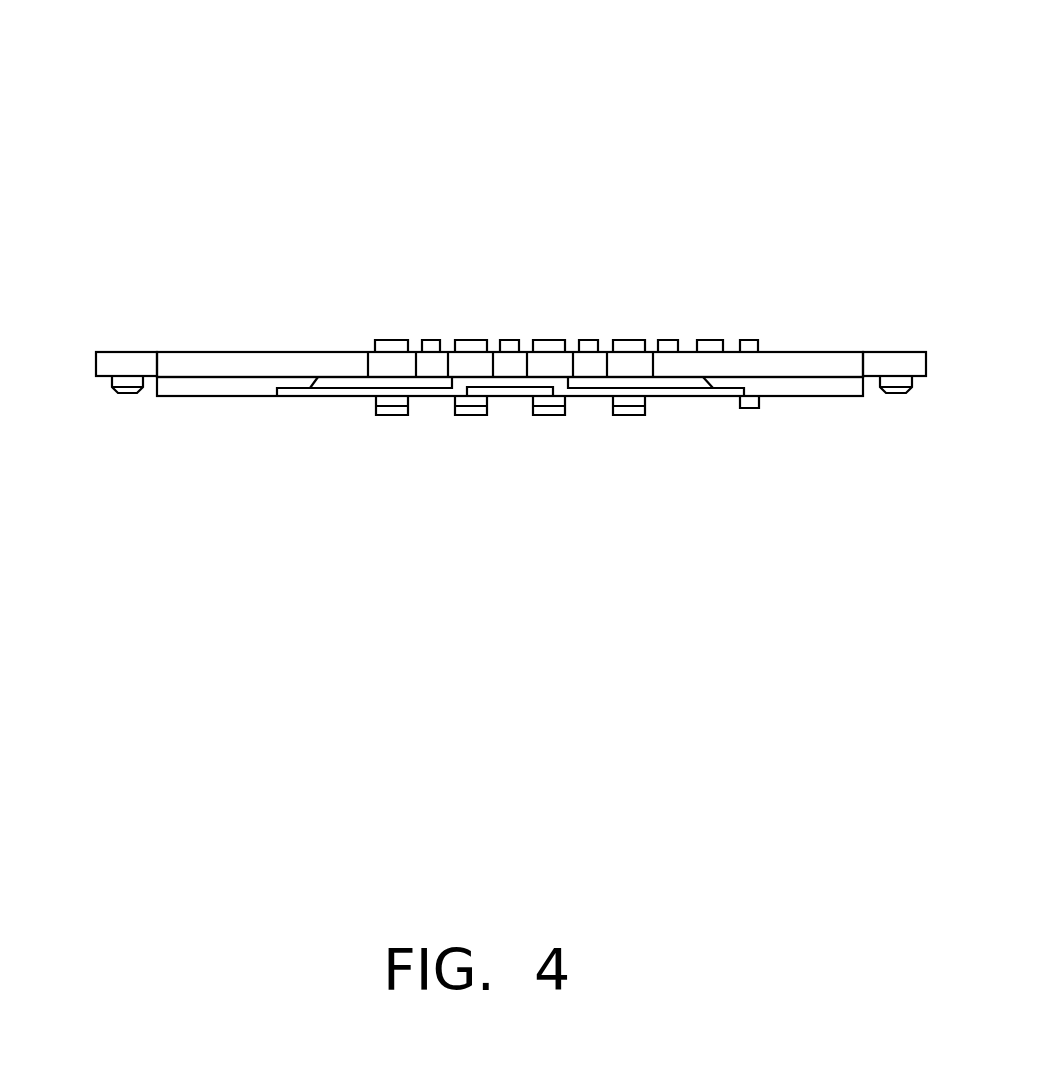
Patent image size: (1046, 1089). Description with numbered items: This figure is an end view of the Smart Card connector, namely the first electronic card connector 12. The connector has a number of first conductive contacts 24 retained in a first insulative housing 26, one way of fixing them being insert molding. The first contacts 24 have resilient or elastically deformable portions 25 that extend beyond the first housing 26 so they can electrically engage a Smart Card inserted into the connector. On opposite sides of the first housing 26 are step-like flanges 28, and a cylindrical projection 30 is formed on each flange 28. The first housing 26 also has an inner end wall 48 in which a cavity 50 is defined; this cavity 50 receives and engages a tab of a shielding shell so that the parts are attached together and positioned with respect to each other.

The first electronic card connector 12 is at (454, 44).
The first conductive contacts 24 is at (549, 348).
The resilient or elastically deformable portions 25 is at (392, 410).
The first insulative housing 26 is at (809, 350).
The step-like flanges 28 is at (123, 360).
The cylindrical projection 30 is at (128, 390).
The inner end wall 48 is at (683, 390).
The cavity 50 is at (510, 391).